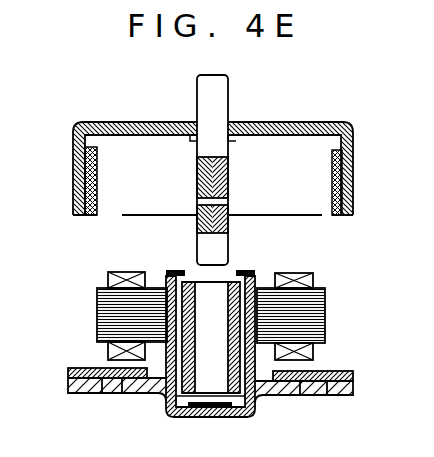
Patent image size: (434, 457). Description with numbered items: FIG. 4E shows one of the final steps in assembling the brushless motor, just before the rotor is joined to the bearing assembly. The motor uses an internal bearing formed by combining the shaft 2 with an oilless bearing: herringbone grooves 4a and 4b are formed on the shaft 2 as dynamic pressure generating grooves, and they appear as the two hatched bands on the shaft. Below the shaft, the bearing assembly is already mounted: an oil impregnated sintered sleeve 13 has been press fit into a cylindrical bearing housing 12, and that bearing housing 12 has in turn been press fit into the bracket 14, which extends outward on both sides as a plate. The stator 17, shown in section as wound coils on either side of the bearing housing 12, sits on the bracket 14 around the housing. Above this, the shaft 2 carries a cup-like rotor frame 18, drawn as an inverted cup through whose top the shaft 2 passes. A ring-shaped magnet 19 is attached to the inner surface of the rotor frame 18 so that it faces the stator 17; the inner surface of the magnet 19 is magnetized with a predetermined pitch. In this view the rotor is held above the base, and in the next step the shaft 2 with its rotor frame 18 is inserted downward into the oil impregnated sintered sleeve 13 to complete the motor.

The shaft 2 is at (219, 93).
The herringbone groove 4a is at (228, 175).
The herringbone groove 4b is at (228, 222).
The bearing housing 12 is at (245, 368).
The oil impregnated sintered sleeve 13 is at (231, 358).
The bracket 14 is at (92, 394).
The stator 17 is at (104, 318).
The rotor frame 18 is at (327, 125).
The magnet 19 is at (328, 193).